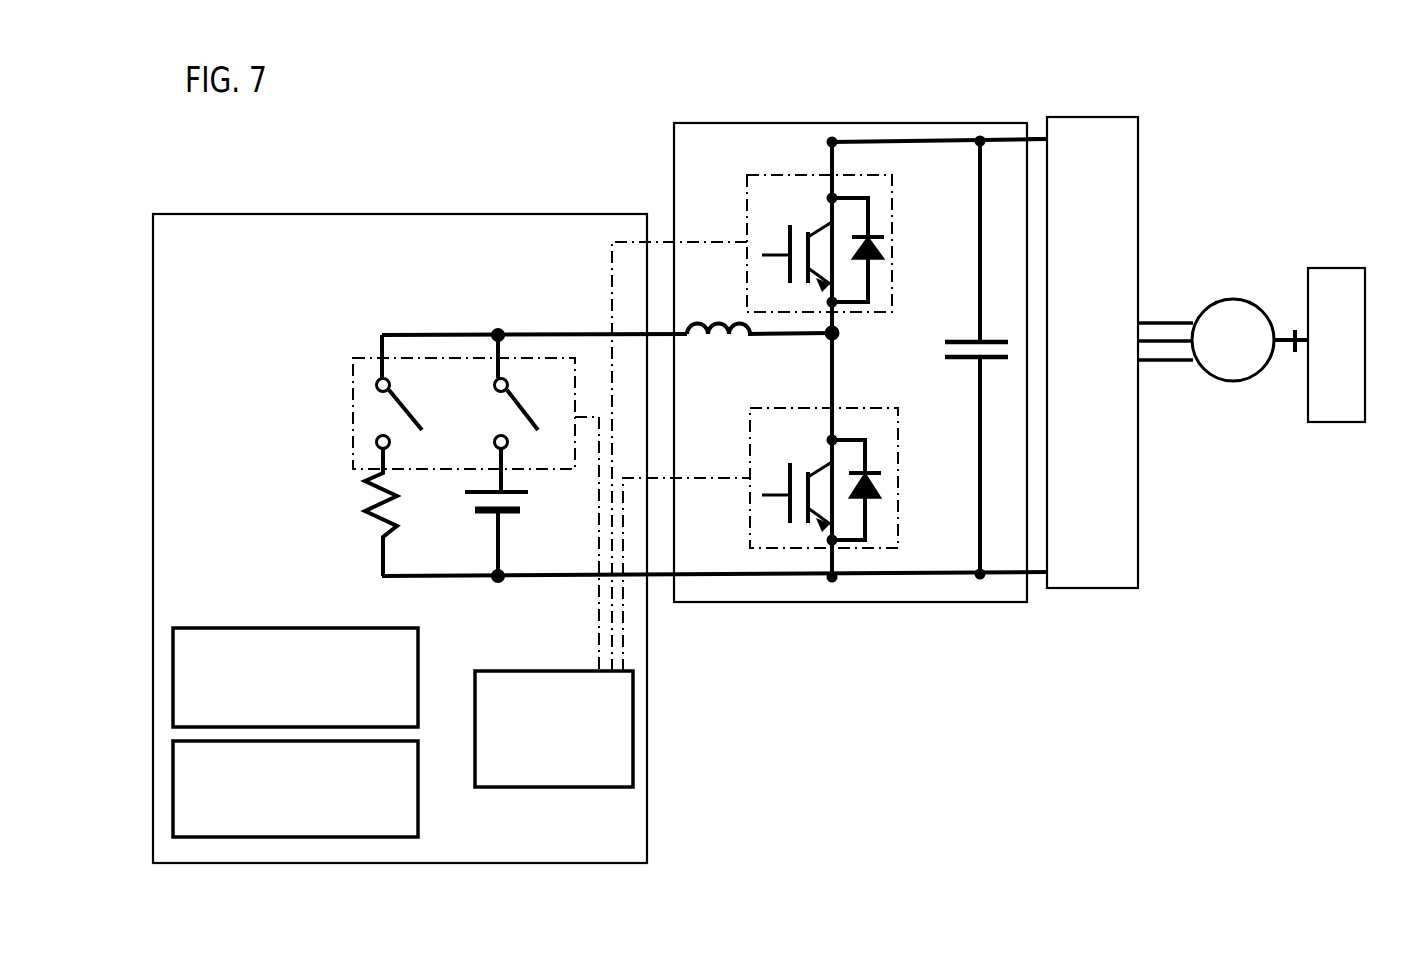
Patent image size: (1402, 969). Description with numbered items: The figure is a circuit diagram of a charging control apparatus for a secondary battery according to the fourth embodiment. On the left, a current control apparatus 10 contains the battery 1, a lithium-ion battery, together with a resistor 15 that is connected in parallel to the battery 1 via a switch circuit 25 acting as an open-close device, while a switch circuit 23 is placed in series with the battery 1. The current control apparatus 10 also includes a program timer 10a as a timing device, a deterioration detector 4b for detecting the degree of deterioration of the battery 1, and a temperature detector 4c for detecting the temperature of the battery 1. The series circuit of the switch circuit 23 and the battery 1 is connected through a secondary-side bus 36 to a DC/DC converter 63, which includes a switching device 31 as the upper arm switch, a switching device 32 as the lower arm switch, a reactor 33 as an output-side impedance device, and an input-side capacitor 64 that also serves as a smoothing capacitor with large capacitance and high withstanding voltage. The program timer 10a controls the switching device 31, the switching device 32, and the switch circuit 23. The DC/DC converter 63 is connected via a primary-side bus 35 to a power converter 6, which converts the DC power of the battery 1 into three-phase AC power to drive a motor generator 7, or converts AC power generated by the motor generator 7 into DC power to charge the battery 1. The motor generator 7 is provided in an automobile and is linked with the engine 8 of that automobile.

The current control apparatus 10 is at (455, 213).
The switch circuit 25 is at (398, 382).
The switch circuit 23 is at (486, 378).
The resistor 15 is at (363, 519).
The battery 1 is at (525, 500).
The secondary-side bus 36 is at (628, 244).
The program timer 10a is at (543, 788).
The deterioration detector 4b is at (245, 627).
The temperature detector 4c is at (418, 803).
The DC/DC converter 63 is at (888, 120).
The reactor 33 is at (714, 315).
The switching device 31 is at (824, 200).
The switching device 32 is at (788, 530).
The input-side capacitor 64 is at (967, 345).
The primary-side bus 35 is at (1037, 135).
The power converter 6 is at (1140, 190).
The motor generator 7 is at (1233, 297).
The engine 8 is at (1345, 267).